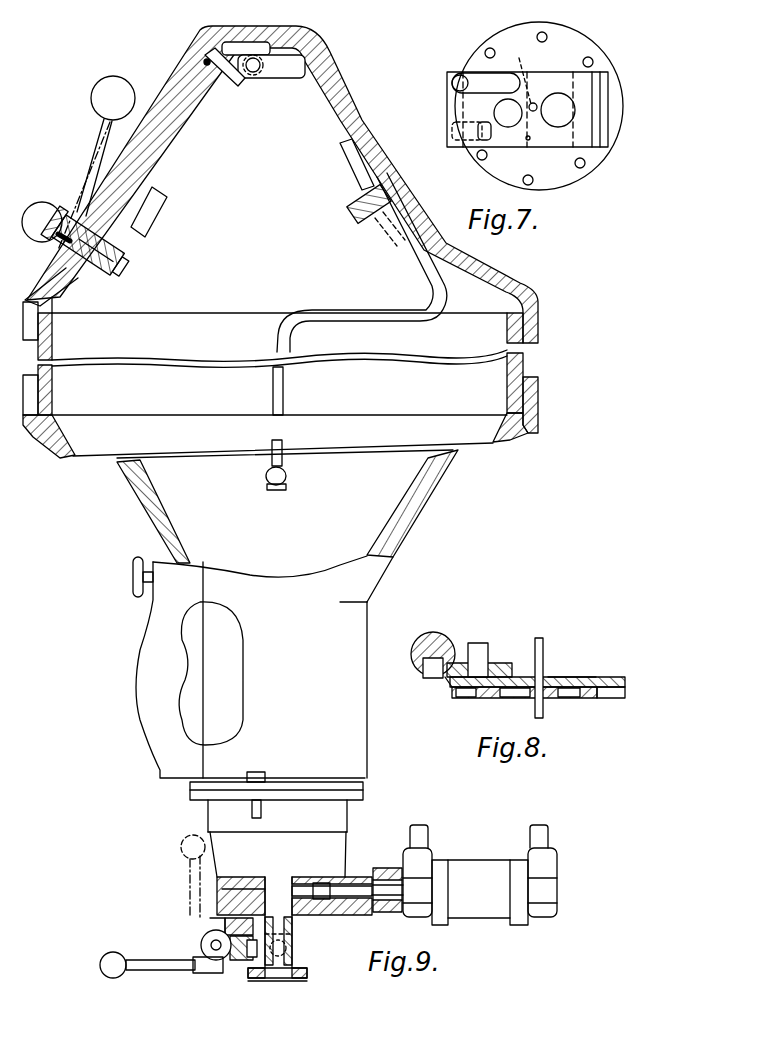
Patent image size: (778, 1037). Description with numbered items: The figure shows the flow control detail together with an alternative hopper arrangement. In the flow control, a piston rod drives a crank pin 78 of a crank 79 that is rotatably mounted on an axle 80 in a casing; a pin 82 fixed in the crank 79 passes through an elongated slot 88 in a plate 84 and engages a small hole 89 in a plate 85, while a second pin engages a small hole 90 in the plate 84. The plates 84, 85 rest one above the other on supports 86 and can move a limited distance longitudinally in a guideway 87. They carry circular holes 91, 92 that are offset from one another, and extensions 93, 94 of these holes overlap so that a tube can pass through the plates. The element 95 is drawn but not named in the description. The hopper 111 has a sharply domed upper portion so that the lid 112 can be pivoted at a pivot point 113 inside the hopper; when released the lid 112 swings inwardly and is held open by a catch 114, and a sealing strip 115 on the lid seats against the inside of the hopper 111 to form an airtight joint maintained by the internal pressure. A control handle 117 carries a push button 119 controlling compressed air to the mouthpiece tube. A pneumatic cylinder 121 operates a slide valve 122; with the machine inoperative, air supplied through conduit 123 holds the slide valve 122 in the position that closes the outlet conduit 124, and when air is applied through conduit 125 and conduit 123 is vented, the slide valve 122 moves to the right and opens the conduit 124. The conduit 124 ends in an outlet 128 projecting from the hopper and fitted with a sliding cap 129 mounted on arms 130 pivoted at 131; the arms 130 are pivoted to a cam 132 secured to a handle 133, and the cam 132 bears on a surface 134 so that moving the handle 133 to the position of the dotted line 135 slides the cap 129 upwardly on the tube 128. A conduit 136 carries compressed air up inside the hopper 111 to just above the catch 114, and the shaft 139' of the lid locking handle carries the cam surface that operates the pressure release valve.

In FIG. 8, the crank pin 78 is at (423, 675).
In FIG. 8, the crank 79 is at (498, 667).
In FIG. 8, the axle 80 is at (477, 643).
In FIG. 8, the pin 82 is at (450, 681).
In FIG. 7, the plate 84 is at (550, 147).
In FIG. 8, the plate 84 is at (598, 680).
In FIG. 8, the plate 85 is at (598, 692).
In FIG. 8, the supports 86 is at (462, 698).
In FIG. 7, the guideway 87 is at (602, 82).
In FIG. 7, the elongated slot 88 is at (477, 73).
In FIG. 7, the small hole 89 is at (452, 83).
In FIG. 7, the small hole 90 is at (478, 132).
In FIG. 7, the circular hole 91 is at (576, 113).
In FIG. 8, the circular hole 91 is at (568, 677).
In FIG. 7, the circular hole 92 is at (528, 140).
In FIG. 8, the circular hole 92 is at (527, 690).
In FIG. 7, the extension 93 is at (535, 104).
In FIG. 7, the extension 94 is at (513, 73).
In FIG. 7, the blade 95 is at (518, 121).
In FIG. 8, the blade 95 is at (544, 653).
In FIG. 9, the hopper 111 is at (430, 503).
In FIG. 9, the lid 112 is at (158, 160).
In FIG. 9, the pivot point 113 is at (258, 73).
In FIG. 9, the catch 114 is at (352, 216).
In FIG. 9, the sealing strip 115 is at (204, 60).
In FIG. 9, the control handle 117 is at (147, 657).
In FIG. 9, the push button 119 is at (133, 573).
In FIG. 9, the pneumatic cylinder 121 is at (478, 872).
In FIG. 9, the slide valve 122 is at (282, 888).
In FIG. 9, the conduit 123 is at (530, 838).
In FIG. 9, the outlet conduit 124 is at (296, 946).
In FIG. 9, the conduit 125 is at (410, 838).
In FIG. 9, the outlet 128 is at (294, 924).
In FIG. 9, the sliding cap 129 is at (306, 973).
In FIG. 9, the arms 130 is at (226, 958).
In FIG. 9, the pivot 131 is at (247, 957).
In FIG. 9, the cam 132 is at (201, 945).
In FIG. 9, the handle 133 is at (150, 971).
In FIG. 9, the surface 134 is at (212, 925).
In FIG. 9, the dotted line 135 is at (181, 841).
In FIG. 9, the conduit 136 is at (302, 314).
In FIG. 9, the shaft 139' is at (96, 191).